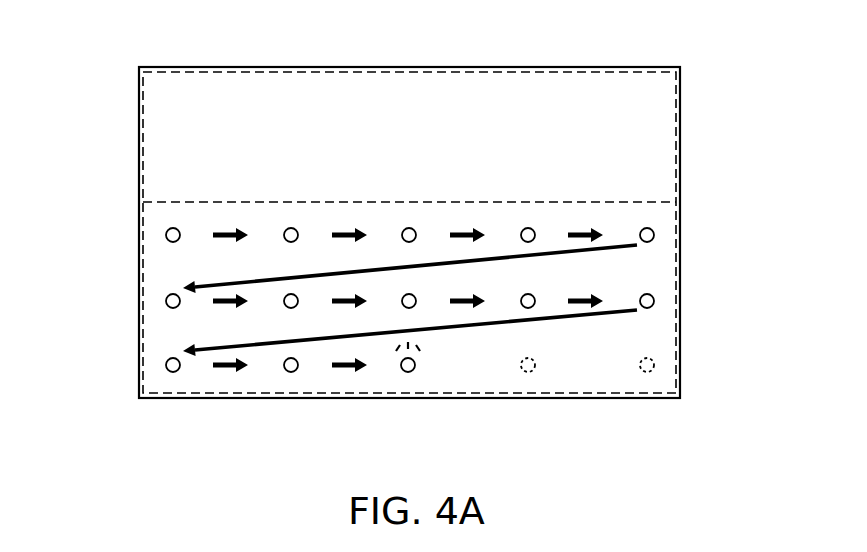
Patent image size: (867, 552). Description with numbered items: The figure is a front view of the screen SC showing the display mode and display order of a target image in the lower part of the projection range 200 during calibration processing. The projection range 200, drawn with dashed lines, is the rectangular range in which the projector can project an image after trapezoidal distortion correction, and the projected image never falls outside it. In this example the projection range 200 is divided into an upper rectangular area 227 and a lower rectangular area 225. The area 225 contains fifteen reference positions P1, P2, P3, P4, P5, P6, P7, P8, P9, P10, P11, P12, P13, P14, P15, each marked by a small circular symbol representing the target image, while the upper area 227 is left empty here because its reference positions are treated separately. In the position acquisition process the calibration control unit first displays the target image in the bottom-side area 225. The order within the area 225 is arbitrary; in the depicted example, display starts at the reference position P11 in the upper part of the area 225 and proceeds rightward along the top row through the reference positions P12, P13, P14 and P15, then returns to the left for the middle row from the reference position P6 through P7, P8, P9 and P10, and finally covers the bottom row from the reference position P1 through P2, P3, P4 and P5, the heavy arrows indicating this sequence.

The projection range 200 is at (676, 78).
The screen SC is at (682, 100).
The rectangular area (upper part) 227 is at (663, 168).
The rectangular area (lower part) 225 is at (663, 381).
The reference position P1 is at (171, 375).
The reference position P2 is at (291, 365).
The reference position P3 is at (406, 375).
The reference position P4 is at (526, 375).
The reference position P5 is at (645, 375).
The reference position P6 is at (167, 313).
The reference position P7 is at (291, 301).
The reference position P8 is at (409, 301).
The reference position P9 is at (528, 301).
The reference position P10 is at (655, 312).
The reference position P11 is at (167, 247).
The reference position P12 is at (298, 225).
The reference position P13 is at (416, 225).
The reference position P14 is at (535, 225).
The reference position P15 is at (645, 225).